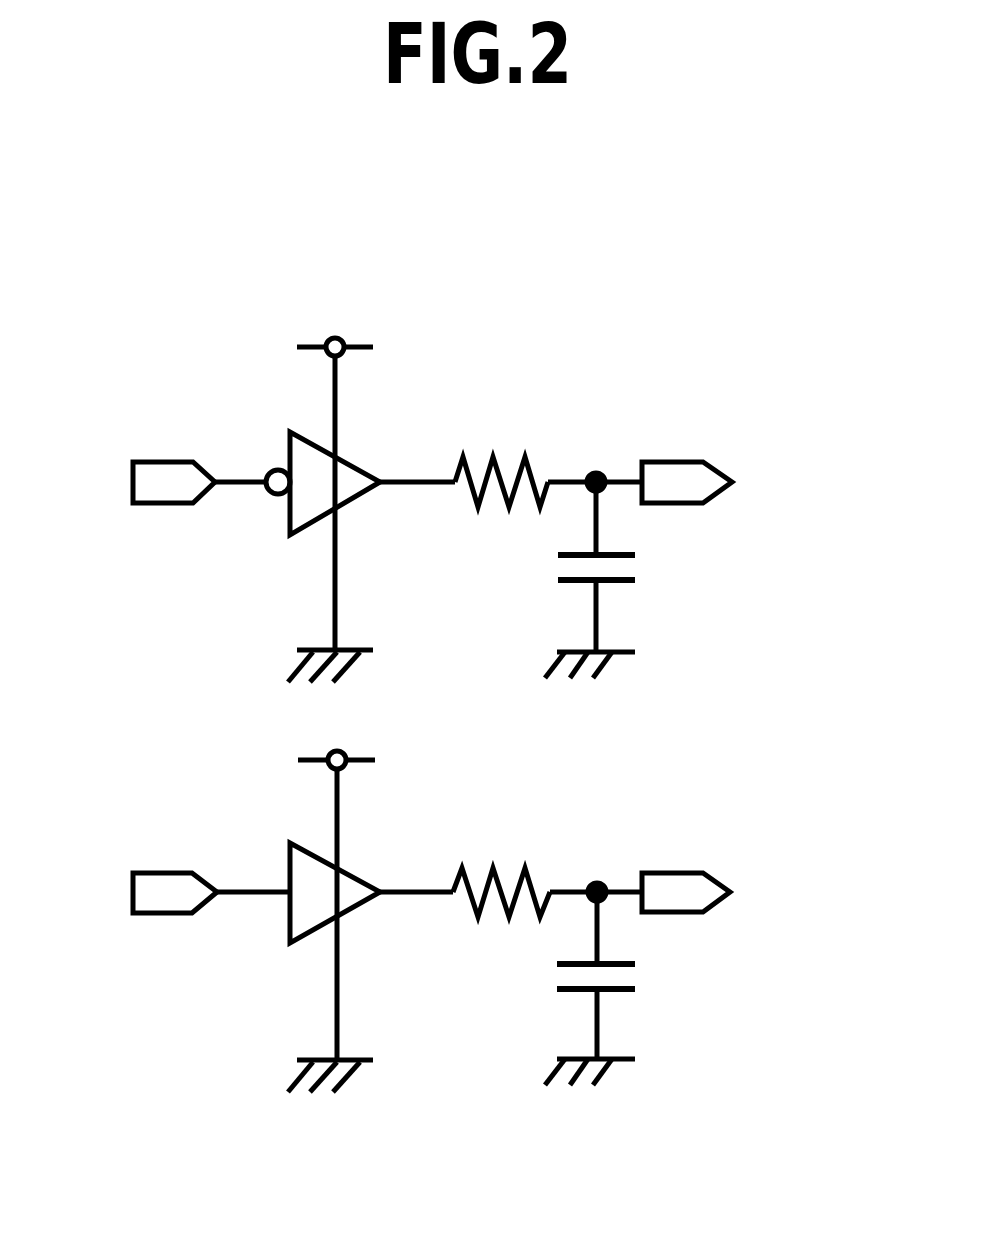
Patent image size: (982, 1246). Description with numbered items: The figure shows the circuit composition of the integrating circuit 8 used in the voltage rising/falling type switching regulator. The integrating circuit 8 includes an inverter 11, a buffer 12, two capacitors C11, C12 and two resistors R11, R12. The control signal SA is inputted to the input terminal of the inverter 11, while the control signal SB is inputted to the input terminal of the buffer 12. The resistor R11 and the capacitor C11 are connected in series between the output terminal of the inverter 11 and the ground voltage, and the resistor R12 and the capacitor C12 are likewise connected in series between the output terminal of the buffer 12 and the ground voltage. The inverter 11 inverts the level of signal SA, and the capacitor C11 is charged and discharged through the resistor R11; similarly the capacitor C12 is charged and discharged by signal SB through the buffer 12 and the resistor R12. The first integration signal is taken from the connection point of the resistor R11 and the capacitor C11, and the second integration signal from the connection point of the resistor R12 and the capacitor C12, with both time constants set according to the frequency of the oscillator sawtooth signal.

The integrating circuit 8 is at (614, 372).
The inverter 11 is at (365, 468).
The buffer 12 is at (365, 882).
The resistor R11 is at (500, 450).
The capacitor C11 is at (638, 567).
The resistor R12 is at (501, 862).
The capacitor C12 is at (640, 975).